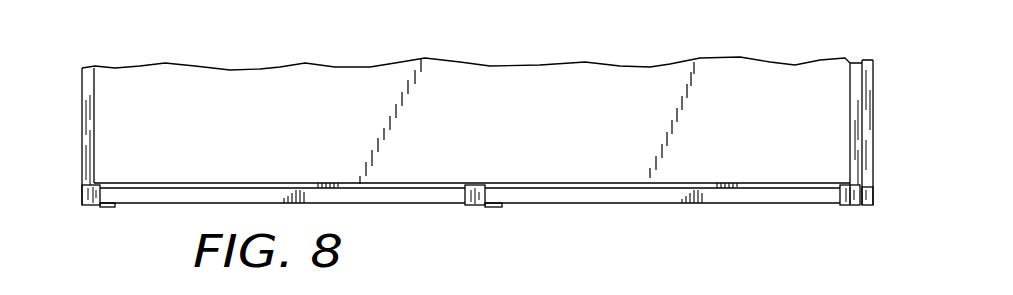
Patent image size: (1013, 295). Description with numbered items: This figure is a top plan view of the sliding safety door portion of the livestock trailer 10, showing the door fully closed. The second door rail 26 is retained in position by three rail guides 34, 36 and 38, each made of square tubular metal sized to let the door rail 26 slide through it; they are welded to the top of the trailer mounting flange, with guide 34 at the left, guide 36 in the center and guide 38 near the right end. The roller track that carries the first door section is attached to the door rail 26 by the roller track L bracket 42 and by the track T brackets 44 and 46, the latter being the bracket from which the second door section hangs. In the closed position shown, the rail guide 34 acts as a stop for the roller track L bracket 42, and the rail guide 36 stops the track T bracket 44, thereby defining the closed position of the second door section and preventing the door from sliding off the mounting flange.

The livestock trailer 10 is at (826, 59).
The second door rail 26 is at (264, 200).
The rail guide 34 is at (90, 190).
The rail guide 36 is at (477, 182).
The rail guide 38 is at (845, 190).
The roller track L bracket 42 is at (107, 207).
The track T bracket 44 is at (488, 207).
The track T bracket 46 is at (870, 207).